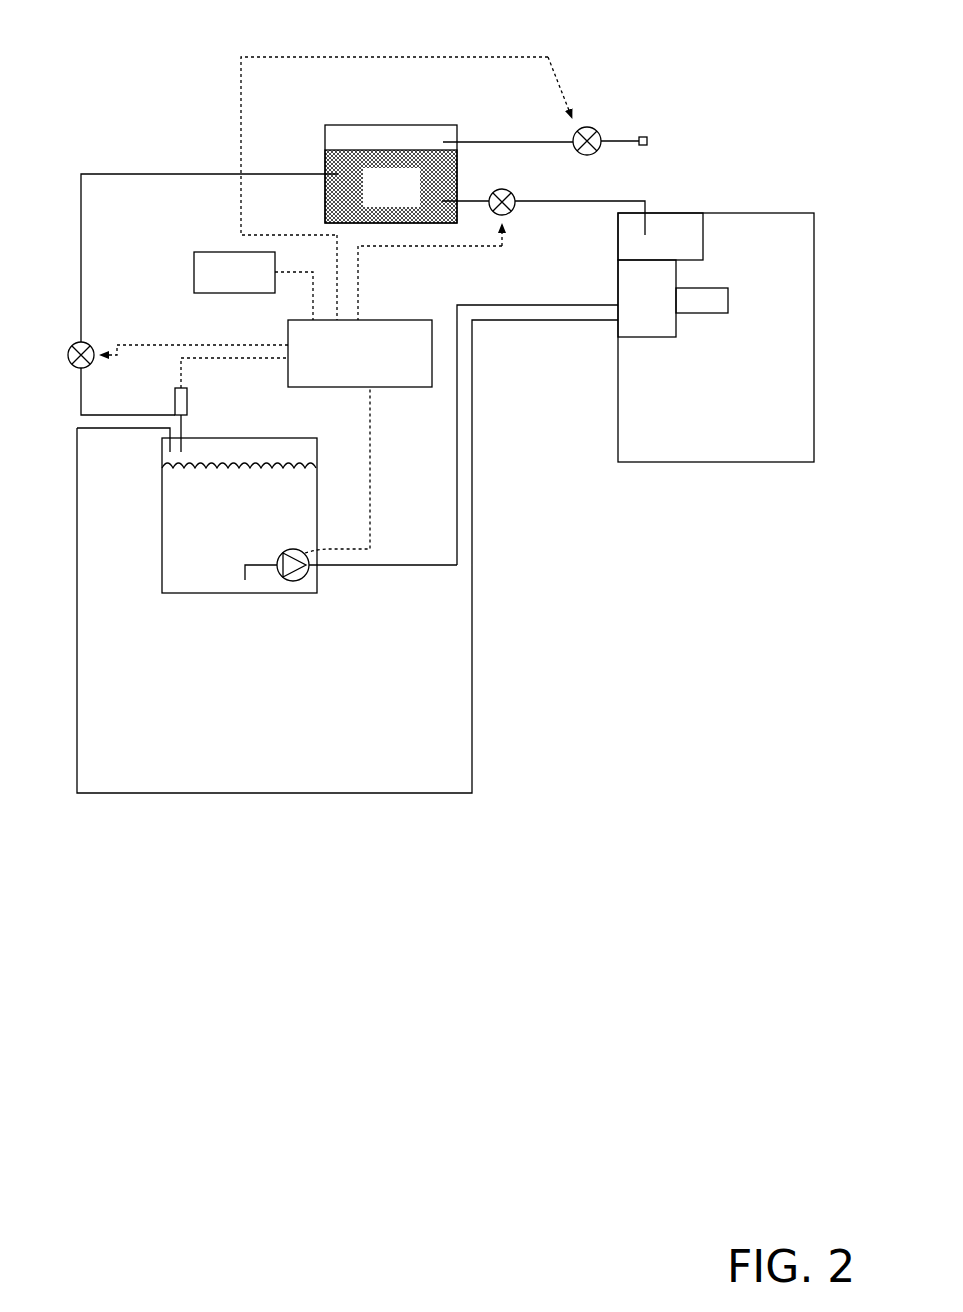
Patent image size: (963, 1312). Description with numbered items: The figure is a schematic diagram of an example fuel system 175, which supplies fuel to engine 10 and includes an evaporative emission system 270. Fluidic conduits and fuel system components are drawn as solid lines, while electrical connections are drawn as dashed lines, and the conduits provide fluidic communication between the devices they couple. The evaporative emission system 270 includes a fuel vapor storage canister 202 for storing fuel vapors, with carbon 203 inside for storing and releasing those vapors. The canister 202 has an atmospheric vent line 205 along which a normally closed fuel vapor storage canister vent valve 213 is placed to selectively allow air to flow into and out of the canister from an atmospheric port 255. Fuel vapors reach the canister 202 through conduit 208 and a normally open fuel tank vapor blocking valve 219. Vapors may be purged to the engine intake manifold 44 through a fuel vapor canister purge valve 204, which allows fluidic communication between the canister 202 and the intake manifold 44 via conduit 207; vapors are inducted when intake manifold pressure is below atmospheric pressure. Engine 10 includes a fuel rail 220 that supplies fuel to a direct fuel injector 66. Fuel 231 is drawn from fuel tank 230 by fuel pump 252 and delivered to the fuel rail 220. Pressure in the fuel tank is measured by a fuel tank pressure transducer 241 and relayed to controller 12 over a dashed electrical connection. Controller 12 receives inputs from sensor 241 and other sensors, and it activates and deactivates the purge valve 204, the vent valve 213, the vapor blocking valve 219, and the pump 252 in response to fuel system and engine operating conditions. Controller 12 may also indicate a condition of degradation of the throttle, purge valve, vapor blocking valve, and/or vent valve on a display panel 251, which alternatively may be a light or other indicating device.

The fuel system 175 is at (108, 38).
The evaporative emission system 270 is at (566, 40).
The fuel vapor storage canister 202 is at (325, 128).
The carbon 203 is at (391, 186).
The atmospheric vent line 205 is at (470, 141).
The fuel vapor storage canister vent valve 213 is at (584, 127).
The atmospheric port 255 is at (643, 148).
The conduit 207 is at (534, 204).
The fuel vapor canister purge valve 204 is at (504, 188).
The engine 10 is at (815, 291).
The engine intake manifold 44 is at (660, 236).
The fuel rail 220 is at (647, 298).
The direct fuel injector 66 is at (702, 301).
The conduit 208 is at (81, 222).
The fuel tank vapor blocking valve 219 is at (87, 342).
The fuel tank pressure transducer 241 is at (175, 408).
The controller 12 is at (360, 311).
The display panel 251 is at (253, 286).
The fuel tank 230 is at (190, 438).
The fuel 231 is at (262, 511).
The fuel pump 252 is at (282, 552).